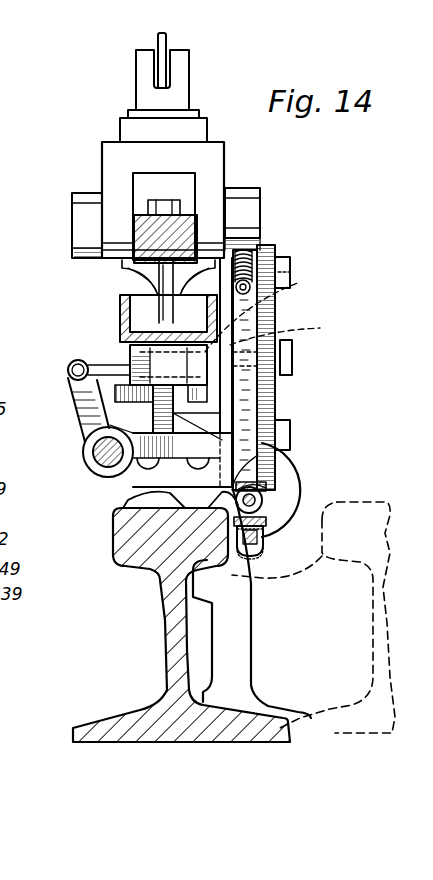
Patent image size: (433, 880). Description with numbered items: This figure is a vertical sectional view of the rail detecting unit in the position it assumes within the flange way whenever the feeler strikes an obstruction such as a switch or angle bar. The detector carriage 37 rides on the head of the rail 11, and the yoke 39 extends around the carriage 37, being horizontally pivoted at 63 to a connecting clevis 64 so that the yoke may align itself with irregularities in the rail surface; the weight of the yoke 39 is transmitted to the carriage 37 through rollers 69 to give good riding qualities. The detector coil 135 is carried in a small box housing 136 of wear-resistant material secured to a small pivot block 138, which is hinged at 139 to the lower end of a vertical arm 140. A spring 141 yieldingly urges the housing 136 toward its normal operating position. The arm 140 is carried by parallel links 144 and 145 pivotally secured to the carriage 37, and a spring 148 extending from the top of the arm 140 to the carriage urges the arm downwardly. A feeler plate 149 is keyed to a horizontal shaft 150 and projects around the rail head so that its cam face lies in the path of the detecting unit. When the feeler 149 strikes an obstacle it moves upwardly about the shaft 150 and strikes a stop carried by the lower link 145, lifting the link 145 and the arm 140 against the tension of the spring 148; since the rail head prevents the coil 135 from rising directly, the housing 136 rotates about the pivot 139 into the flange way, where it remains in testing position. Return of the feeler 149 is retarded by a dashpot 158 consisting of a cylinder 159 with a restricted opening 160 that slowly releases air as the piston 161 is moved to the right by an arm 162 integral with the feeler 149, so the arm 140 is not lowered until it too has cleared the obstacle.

The rail 11 is at (181, 601).
The carriage 37 is at (120, 306).
The yoke 39 is at (137, 219).
The horizontal pivot 63 is at (259, 211).
The connecting clevis 64 is at (224, 161).
The rollers 69 is at (150, 283).
The detector coil 135 is at (264, 568).
The box housing 136 is at (266, 548).
The pivot block 138 is at (302, 515).
The hinge pivot 139 is at (268, 492).
The vertical arm 140 is at (283, 298).
The spring 141 is at (262, 490).
The upper link 144 is at (291, 270).
The lower link 145 is at (282, 386).
The spring 148 is at (254, 258).
The feeler plate 149 is at (263, 483).
The horizontal shaft 150 is at (92, 452).
The dashpot 158 is at (246, 337).
The cylinder 159 is at (130, 346).
The restricted opening 160 is at (280, 334).
The piston 161 is at (132, 352).
The arm 162 is at (82, 405).